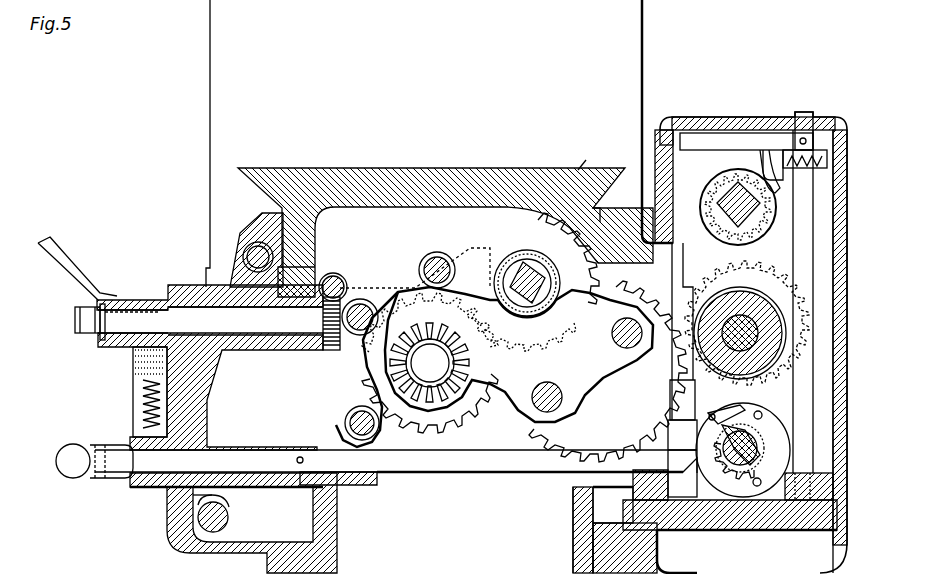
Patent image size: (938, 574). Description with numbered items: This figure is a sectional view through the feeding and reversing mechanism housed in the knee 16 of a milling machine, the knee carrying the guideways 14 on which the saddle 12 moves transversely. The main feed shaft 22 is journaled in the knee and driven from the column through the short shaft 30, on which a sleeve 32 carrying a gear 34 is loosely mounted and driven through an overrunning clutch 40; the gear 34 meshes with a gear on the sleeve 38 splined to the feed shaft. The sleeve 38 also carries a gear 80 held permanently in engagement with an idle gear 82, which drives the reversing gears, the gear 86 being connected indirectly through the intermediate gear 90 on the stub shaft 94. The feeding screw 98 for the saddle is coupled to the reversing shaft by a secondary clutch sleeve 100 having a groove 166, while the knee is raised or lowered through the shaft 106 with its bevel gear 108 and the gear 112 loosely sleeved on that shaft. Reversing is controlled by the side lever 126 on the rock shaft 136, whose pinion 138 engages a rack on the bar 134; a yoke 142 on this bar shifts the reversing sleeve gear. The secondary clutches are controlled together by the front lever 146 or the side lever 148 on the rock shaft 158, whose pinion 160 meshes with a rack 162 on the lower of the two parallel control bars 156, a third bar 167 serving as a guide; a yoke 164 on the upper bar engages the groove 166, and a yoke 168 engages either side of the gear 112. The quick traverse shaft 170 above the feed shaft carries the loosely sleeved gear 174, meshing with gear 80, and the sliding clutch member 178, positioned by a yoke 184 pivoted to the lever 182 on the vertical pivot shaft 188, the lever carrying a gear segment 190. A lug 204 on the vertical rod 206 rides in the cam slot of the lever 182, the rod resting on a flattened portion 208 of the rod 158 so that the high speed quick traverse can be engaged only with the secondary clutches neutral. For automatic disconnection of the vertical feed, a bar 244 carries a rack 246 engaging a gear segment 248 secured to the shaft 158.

The saddle 12 is at (526, 286).
The guideways 14 is at (240, 178).
The knee 16 is at (644, 523).
The main feed shaft 22 is at (738, 320).
The short shaft 30 is at (745, 468).
The sleeve 32 is at (737, 472).
The gear 34 is at (730, 478).
The sleeve 38 is at (752, 365).
The overrunning clutch 40 is at (758, 470).
The gear 80 is at (707, 390).
The idle gear 82 is at (617, 396).
The gear 86 is at (512, 226).
The intermediate gear 90 is at (541, 455).
The stub shaft 94 is at (548, 392).
The feeding screw 98 is at (522, 265).
The sleeve 100 is at (537, 262).
The shaft 106 is at (430, 363).
The bevel gear 108 is at (429, 354).
The gear 112 is at (505, 425).
The lever 126 is at (62, 234).
The bar 134 is at (335, 284).
The rock shaft 136 is at (180, 312).
The pinion 138 is at (325, 348).
The yoke 142 is at (437, 247).
The lever 146 is at (210, 321).
The lever 148 is at (73, 455).
The control bars 156 is at (363, 312).
The rock shaft 158 is at (458, 470).
The pinion 160 is at (362, 487).
The rack 162 is at (380, 427).
The yoke 164 is at (478, 248).
The groove 166 is at (592, 150).
The third bar 167 is at (437, 268).
The yoke 168 is at (352, 378).
The shaft 170 is at (740, 200).
The gear 174 is at (747, 313).
The clutch member 178 is at (737, 190).
The lever 182 is at (692, 134).
The yoke 184 is at (722, 160).
The vertical pivot shaft 188 is at (800, 112).
The gear segment 190 is at (813, 150).
The lug 204 is at (682, 138).
The vertical rod 206 is at (613, 210).
The flattened portion 208 is at (650, 470).
The bar 244 is at (222, 526).
The rack 246 is at (225, 512).
The gear segment 248 is at (214, 500).